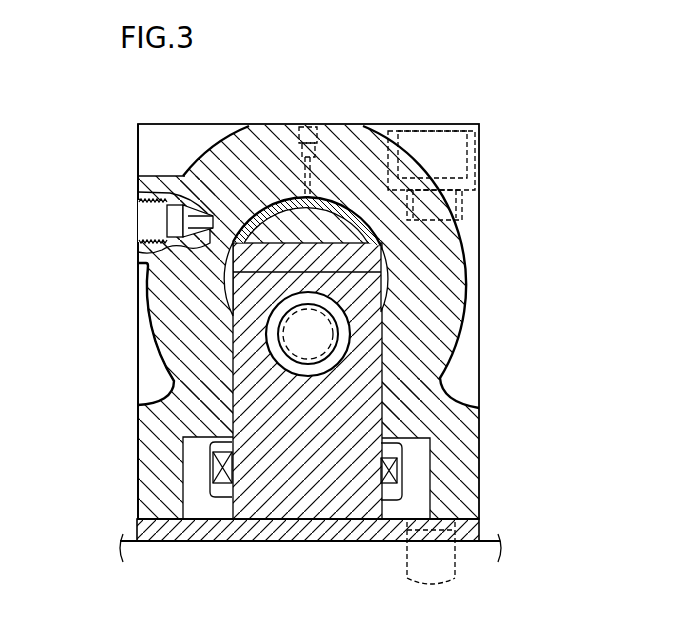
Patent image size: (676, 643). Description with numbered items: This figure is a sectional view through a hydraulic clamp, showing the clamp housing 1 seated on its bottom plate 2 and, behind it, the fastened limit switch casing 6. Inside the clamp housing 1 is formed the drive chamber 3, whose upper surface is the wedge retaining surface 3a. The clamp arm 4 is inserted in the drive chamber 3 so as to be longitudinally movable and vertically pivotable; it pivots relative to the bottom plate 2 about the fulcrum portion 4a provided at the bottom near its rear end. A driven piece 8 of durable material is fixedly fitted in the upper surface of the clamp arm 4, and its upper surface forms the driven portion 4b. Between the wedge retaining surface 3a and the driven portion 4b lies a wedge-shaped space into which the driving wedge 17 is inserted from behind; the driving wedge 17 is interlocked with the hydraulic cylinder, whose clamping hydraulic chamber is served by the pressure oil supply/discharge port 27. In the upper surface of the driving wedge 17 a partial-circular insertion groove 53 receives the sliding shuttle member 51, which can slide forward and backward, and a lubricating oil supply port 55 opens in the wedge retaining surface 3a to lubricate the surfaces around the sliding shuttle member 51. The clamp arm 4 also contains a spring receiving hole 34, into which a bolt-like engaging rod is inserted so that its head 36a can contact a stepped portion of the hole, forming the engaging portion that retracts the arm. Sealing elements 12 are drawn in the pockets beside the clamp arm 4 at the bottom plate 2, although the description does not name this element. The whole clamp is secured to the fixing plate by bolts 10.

The clamp housing 1 is at (191, 122).
The bottom plate 2 is at (241, 531).
The drive chamber 3 is at (378, 369).
The wedge retaining surface 3a is at (333, 200).
The clamp arm 4 is at (388, 423).
The fulcrum portion 4a is at (307, 520).
The driven portion 4b is at (237, 261).
The limit switch casing 6 is at (147, 148).
The driven piece 8 is at (373, 260).
The bolts 10 is at (462, 158).
The seal 12 is at (397, 493).
The driving wedge 17 is at (241, 126).
The pressure oil supply/discharge port 27 is at (150, 221).
The spring receiving hole 34 is at (274, 348).
The head of the engaging rod 36a is at (317, 364).
The sliding shuttle member 51 is at (285, 200).
The insertion groove 53 is at (362, 205).
The lubricating oil supply port 55 is at (311, 125).